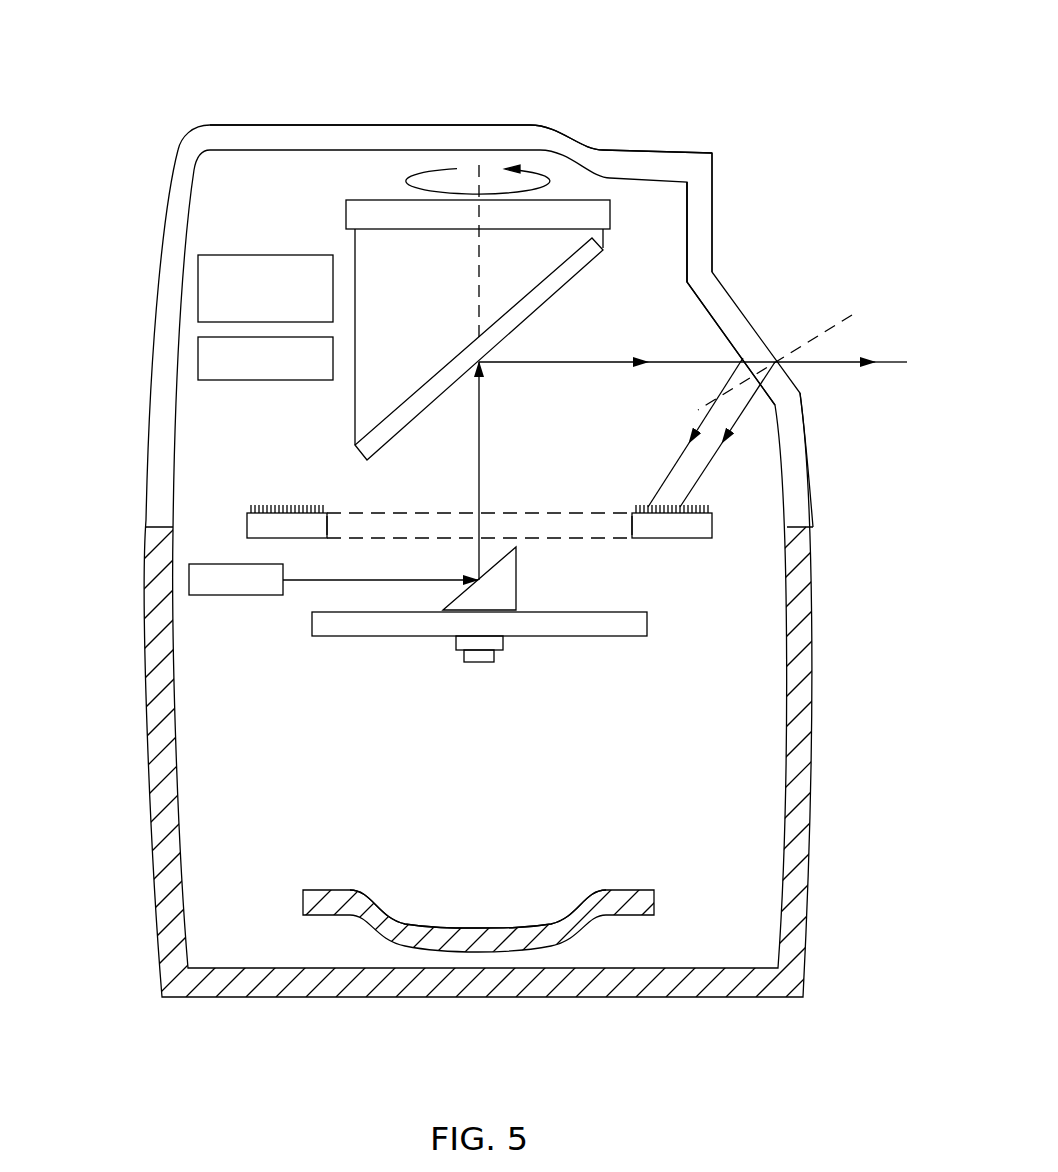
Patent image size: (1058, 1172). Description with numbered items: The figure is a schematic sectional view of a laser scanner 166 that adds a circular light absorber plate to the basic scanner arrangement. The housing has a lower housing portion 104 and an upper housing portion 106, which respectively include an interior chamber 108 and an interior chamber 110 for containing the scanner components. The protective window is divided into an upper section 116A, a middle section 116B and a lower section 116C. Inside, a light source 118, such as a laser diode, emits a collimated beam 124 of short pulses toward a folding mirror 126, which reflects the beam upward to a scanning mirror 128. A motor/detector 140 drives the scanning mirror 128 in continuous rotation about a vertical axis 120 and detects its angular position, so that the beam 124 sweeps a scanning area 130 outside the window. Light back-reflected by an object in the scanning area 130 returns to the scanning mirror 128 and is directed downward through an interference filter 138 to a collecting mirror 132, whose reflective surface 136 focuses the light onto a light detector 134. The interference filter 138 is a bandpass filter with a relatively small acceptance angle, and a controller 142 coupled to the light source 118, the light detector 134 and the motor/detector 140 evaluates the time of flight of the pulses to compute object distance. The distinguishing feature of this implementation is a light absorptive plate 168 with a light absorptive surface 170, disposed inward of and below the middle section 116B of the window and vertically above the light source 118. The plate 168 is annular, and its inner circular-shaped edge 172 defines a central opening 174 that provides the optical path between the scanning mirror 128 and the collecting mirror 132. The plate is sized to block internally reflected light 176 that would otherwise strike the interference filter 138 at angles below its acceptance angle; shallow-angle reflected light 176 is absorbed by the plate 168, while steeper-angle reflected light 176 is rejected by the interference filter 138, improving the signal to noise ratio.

The lower housing portion 104 is at (140, 757).
The upper housing portion 106 is at (157, 222).
The interior chamber 108 is at (272, 757).
The interior chamber 110 is at (275, 423).
The upper section 116A is at (715, 193).
The middle section 116B is at (715, 245).
The lower section 116C is at (795, 440).
The light source 118 is at (255, 597).
The vertical axis of rotation 120 is at (479, 165).
The collimated beam 124 is at (393, 580).
The folding mirror 126 is at (497, 597).
The scanning mirror 128 is at (562, 289).
The scanning area 130 is at (912, 339).
The collecting mirror 132 is at (338, 905).
The light detector 134 is at (455, 640).
The reflective surface 136 is at (458, 925).
The interference filter 138 is at (557, 625).
The motor/detector 140 is at (198, 288).
The controller 142 is at (198, 358).
The laser scanner 166 is at (706, 61).
The light absorptive plate 168 is at (248, 528).
The light absorptive surface 170 is at (292, 505).
The inner circular-shaped edge 172 is at (327, 525).
The central opening 174 is at (522, 492).
The internally reflected light 176 is at (728, 428).